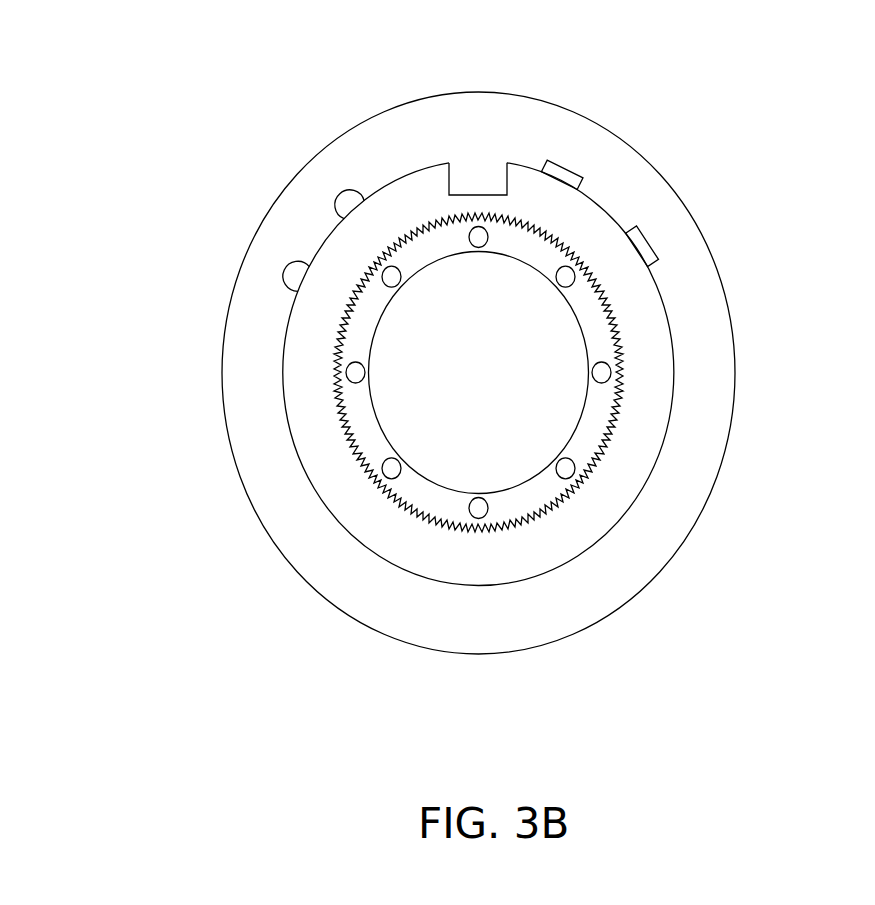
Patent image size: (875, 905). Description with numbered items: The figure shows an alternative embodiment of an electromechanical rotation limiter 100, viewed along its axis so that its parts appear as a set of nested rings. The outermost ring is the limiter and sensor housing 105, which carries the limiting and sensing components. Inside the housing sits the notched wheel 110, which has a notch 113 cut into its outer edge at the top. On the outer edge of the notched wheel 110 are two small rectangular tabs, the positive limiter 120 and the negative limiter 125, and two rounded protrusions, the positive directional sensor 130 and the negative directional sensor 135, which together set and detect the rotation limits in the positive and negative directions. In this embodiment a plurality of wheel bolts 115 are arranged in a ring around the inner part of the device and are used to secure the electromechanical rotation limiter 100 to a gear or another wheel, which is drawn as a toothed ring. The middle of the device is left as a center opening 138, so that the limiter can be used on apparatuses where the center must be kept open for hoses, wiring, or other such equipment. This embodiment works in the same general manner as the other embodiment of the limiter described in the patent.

The electromechanical rotation limiter 100 is at (266, 72).
The limiter and sensor housing 105 is at (712, 332).
The notched wheel 110 is at (633, 432).
The notch 113 is at (481, 190).
The wheel bolt 115 is at (568, 468).
The positive limiter 120 is at (566, 166).
The negative limiter 125 is at (650, 243).
The positive directional sensor 130 is at (290, 268).
The negative directional sensor 135 is at (336, 200).
The center opening 138 is at (413, 400).